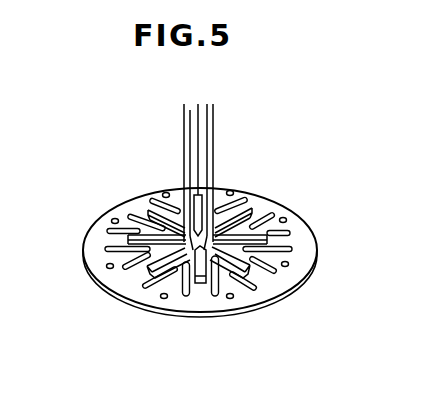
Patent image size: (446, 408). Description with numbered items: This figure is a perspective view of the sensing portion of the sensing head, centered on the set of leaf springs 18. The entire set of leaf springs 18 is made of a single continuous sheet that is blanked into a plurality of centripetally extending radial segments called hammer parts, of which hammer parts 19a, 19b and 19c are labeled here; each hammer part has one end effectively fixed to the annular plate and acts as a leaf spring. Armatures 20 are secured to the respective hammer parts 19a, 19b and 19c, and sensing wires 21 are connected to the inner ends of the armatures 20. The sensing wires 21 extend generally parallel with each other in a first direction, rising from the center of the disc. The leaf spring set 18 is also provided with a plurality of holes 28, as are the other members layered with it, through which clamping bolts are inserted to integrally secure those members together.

The set of leaf springs 18 is at (282, 195).
The hammer part 19a is at (128, 273).
The hammer part 19b is at (198, 296).
The hammer part 19c is at (257, 276).
The armatures 20 is at (165, 212).
The sensing wires 21 is at (214, 118).
The holes 28 is at (288, 218).